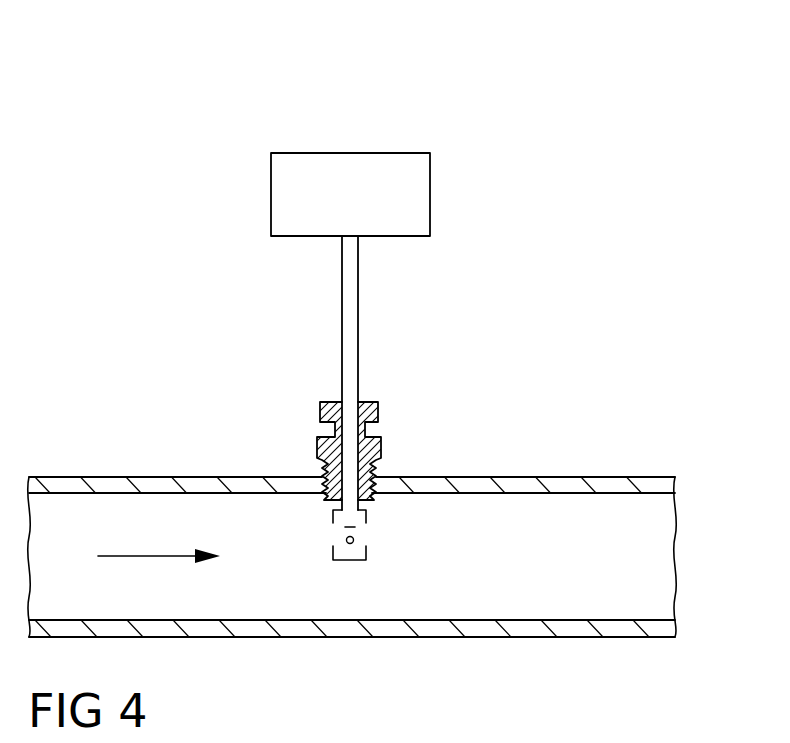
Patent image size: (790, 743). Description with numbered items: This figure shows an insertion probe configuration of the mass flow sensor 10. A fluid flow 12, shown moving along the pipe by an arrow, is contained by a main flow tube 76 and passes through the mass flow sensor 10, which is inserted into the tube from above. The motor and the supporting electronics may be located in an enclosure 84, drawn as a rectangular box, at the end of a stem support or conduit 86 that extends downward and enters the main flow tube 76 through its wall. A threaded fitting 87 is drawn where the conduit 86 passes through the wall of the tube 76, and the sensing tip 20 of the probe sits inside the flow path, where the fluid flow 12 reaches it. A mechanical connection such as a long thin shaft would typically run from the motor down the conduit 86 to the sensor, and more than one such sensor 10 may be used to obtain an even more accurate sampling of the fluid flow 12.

The mass flow sensor 10 is at (235, 160).
The enclosure 84 is at (418, 198).
The stem support or conduit 86 is at (345, 302).
The compression fitting 87 is at (380, 452).
The main flow tube 76 is at (140, 483).
The fluid flow 12 is at (132, 556).
The sensor element 20 is at (355, 550).